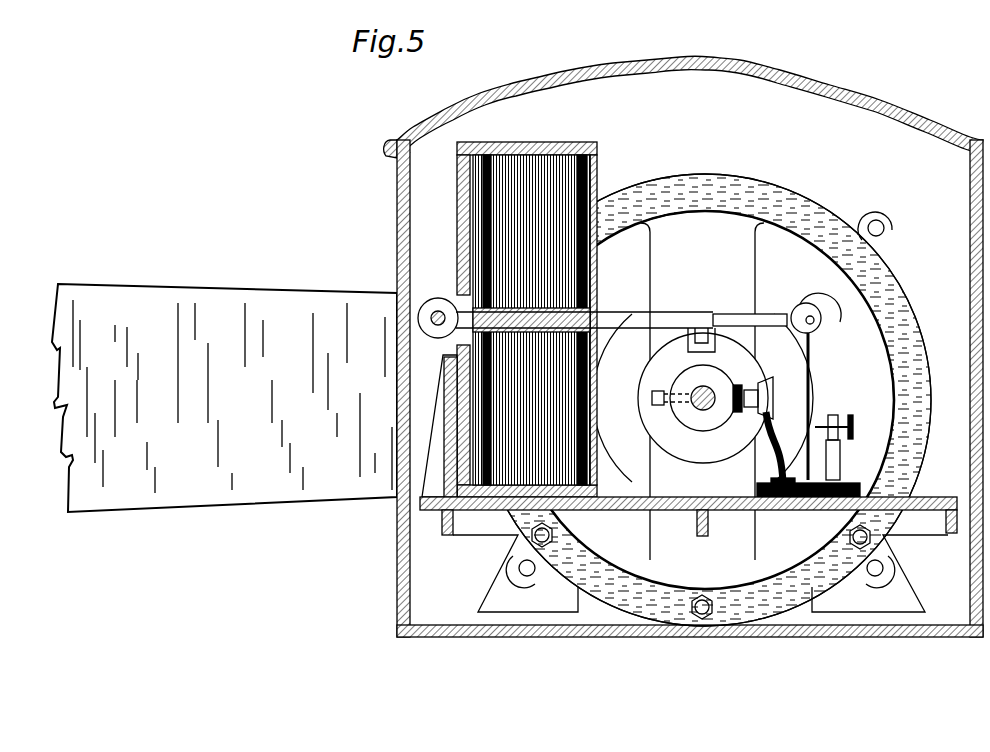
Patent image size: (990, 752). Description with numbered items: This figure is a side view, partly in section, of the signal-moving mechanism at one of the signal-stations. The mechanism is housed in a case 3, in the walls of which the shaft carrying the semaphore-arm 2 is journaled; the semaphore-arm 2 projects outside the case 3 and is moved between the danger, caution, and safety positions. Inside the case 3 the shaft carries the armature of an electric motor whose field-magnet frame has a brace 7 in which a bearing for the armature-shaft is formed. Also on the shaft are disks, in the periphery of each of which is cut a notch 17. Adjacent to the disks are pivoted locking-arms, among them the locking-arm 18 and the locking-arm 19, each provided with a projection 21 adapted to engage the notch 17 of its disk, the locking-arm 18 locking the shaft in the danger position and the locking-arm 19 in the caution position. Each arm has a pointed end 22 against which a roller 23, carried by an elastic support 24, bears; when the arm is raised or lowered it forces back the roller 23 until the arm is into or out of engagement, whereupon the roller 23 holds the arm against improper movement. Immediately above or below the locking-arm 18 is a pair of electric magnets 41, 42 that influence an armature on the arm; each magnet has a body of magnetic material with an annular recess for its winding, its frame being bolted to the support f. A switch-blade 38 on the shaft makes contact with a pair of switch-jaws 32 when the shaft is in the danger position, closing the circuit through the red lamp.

The semaphore-arm 2 is at (224, 398).
The case 3 is at (748, 63).
The brace 7 is at (722, 261).
The notch 17 is at (712, 342).
The locking-arm 18 is at (656, 330).
The locking-arm 19 is at (708, 309).
The projection 21 is at (701, 340).
The pointed end 22 is at (792, 306).
The roller 23 is at (822, 319).
The elastic support 24 is at (812, 381).
The switch-jaws 32 is at (780, 412).
The switch-blade 38 is at (751, 402).
The electric magnet 41 is at (531, 396).
The electric magnet 42 is at (531, 320).
The support f is at (533, 143).